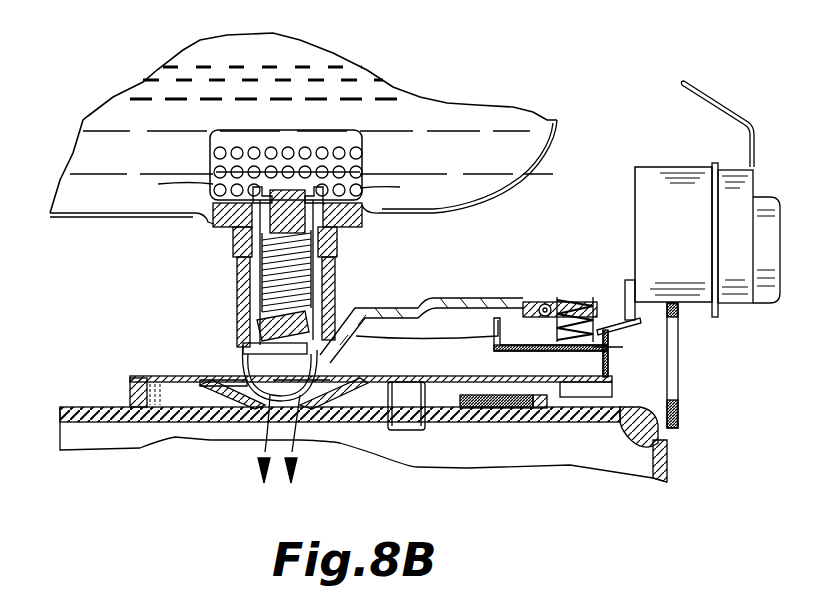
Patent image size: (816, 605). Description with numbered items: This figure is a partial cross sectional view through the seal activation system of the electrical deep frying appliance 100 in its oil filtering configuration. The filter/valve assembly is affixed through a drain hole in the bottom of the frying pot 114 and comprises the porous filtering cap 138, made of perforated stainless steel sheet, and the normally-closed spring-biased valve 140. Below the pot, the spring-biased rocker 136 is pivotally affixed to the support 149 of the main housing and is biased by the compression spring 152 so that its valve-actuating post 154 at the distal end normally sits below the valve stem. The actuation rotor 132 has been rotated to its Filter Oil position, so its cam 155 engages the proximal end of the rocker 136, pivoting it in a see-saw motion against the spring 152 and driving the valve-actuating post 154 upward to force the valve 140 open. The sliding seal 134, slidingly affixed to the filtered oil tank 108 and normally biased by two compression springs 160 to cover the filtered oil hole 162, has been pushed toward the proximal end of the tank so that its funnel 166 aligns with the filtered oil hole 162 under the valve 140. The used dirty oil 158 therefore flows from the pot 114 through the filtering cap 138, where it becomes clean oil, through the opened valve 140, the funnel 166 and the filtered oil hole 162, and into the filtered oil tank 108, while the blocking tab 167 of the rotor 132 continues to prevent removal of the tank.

The electrical deep frying appliance 100 is at (113, 93).
The frying pot 114 is at (137, 212).
The filtering cap 138 is at (362, 148).
The spring-biased valve 140 is at (330, 263).
The valve-actuating post 154 is at (330, 303).
The support 149 is at (527, 340).
The compression spring 152 is at (578, 300).
The actuation rotor 132 is at (672, 167).
The cam 155 is at (670, 317).
The blocking tab 167 is at (673, 390).
The sliding seal 134 is at (443, 375).
The spring-biased rocker 136 is at (220, 327).
The funnel 166 is at (230, 380).
The filtered oil tank 108 is at (90, 408).
The filtered oil hole 162 is at (267, 432).
The dirty oil 158 is at (304, 451).
The compression springs 160 is at (533, 410).